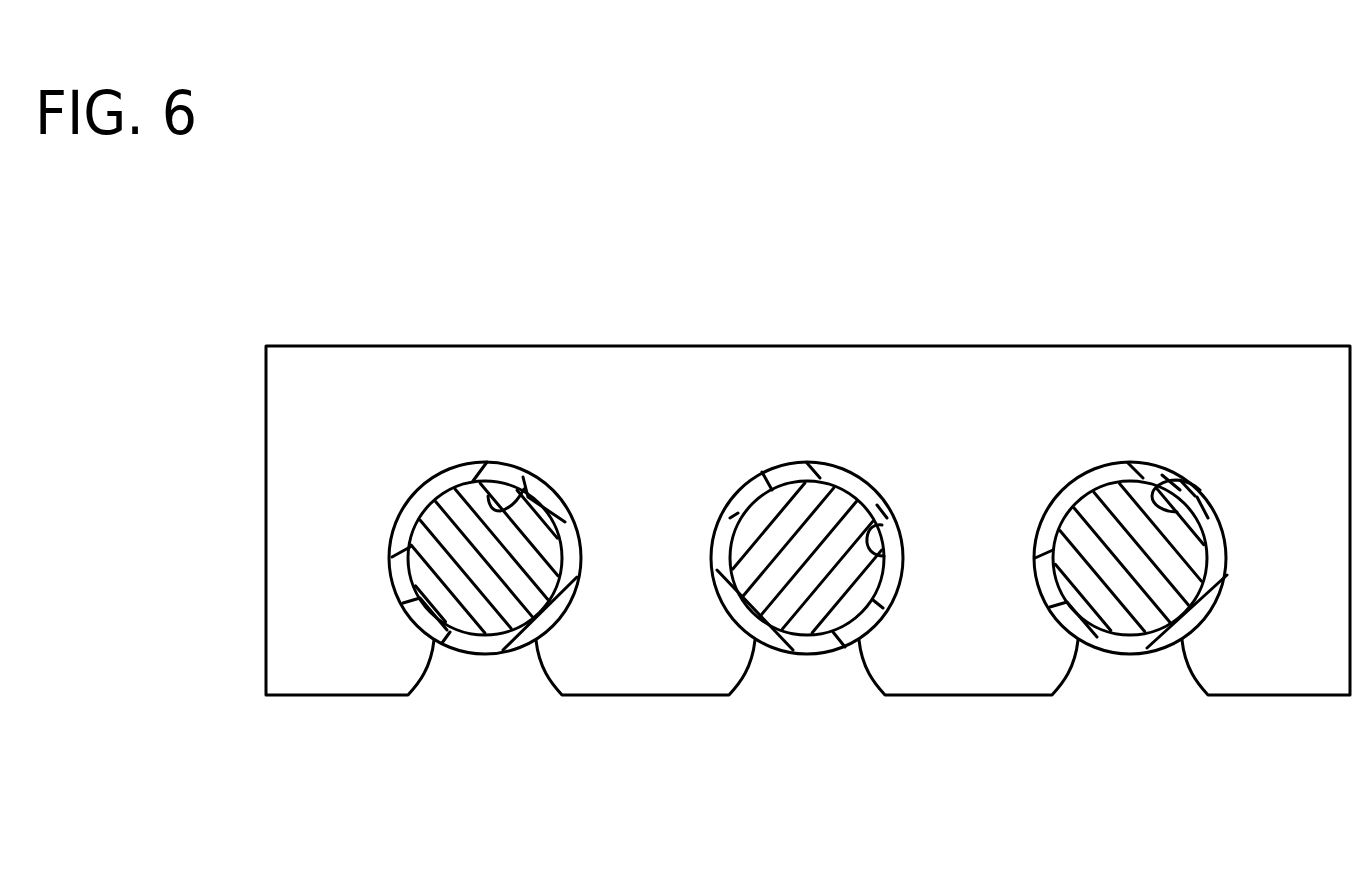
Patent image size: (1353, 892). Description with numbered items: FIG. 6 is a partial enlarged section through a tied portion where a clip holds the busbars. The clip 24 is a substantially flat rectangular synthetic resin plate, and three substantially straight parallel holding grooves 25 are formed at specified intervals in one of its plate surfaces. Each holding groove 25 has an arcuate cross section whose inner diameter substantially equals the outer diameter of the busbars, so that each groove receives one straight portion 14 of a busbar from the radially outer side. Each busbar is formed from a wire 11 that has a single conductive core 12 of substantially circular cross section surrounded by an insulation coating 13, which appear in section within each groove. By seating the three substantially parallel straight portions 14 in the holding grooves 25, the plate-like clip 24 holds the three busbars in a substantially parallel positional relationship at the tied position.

The wire 11 is at (858, 413).
The conductive core 12 is at (762, 518).
The insulation coating 13 is at (852, 490).
The straight portion 14 is at (475, 680).
The clip 24 is at (1153, 415).
The holding groove 25 is at (488, 496).